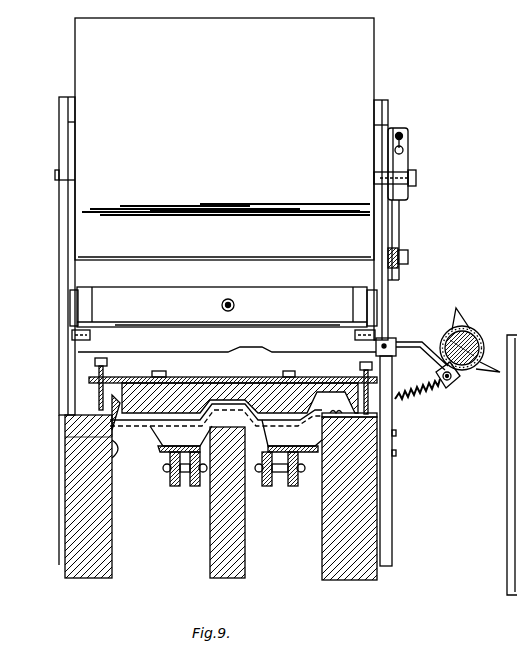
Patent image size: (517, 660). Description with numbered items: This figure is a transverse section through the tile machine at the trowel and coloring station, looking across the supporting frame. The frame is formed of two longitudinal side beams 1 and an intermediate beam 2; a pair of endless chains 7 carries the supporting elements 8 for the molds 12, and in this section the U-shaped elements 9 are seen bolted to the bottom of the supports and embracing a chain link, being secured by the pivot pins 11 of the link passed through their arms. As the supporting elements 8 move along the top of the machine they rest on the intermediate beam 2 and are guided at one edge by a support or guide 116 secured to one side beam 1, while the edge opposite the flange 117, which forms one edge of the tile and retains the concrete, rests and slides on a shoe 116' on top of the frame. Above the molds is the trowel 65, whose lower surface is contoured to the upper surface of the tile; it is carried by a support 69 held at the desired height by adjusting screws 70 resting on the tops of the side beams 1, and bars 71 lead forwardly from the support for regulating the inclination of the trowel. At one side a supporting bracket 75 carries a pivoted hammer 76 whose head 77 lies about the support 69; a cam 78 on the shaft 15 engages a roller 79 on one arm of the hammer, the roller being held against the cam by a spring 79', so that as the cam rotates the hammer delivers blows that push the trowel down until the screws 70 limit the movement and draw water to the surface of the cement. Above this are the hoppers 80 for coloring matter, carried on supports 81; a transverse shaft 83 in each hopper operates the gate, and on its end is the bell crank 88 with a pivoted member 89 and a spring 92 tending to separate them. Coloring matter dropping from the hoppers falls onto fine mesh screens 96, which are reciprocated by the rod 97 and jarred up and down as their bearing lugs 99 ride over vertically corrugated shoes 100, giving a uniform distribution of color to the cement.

The longitudinal side beams 1 is at (72, 545).
The intermediate beam 2 is at (210, 567).
The endless chains 7 is at (192, 486).
The supporting elements 8 is at (150, 435).
The U-shaped elements 9 is at (167, 486).
The pivot pins 11 is at (185, 486).
The molds 12 is at (112, 437).
The shaft 15 is at (484, 345).
The trowel 65 is at (182, 383).
The support 69 is at (225, 376).
The adjusting screws 70 is at (108, 362).
The bars 71 is at (162, 371).
The supporting bracket 75 is at (393, 378).
The hammer 76 is at (371, 350).
The hammer head 77 is at (262, 347).
The cam 78 is at (476, 322).
The roller 79 is at (452, 385).
The spring 79' is at (447, 403).
The hoppers 80 is at (374, 72).
The supports 81 is at (59, 142).
The shaft 83 is at (416, 180).
The bell crank 88 is at (410, 146).
The member 89 is at (400, 216).
The spring 92 is at (404, 136).
The fine mesh screens 96 is at (297, 298).
The rod 97 is at (235, 305).
The bearing lugs 99 is at (72, 326).
The corrugated shoes 100 is at (92, 338).
The support or guide 116 is at (121, 466).
The shoe 116' is at (390, 412).
The flange 117 is at (112, 403).